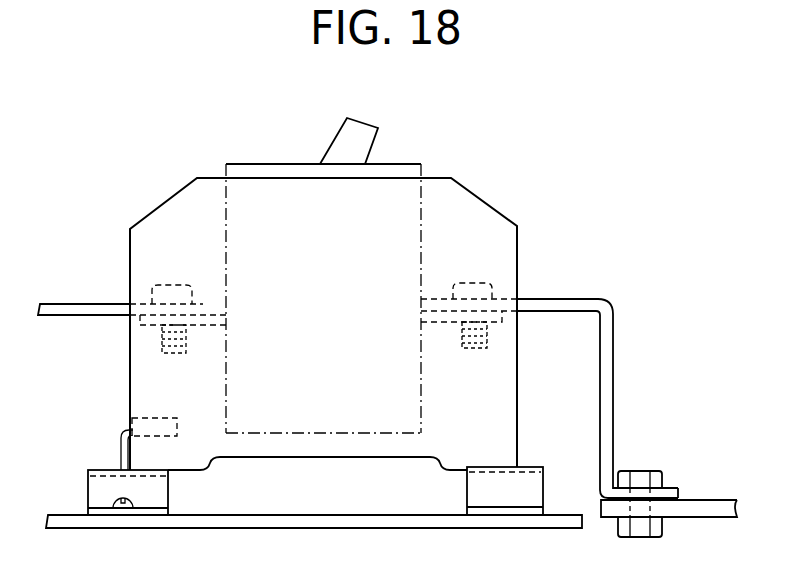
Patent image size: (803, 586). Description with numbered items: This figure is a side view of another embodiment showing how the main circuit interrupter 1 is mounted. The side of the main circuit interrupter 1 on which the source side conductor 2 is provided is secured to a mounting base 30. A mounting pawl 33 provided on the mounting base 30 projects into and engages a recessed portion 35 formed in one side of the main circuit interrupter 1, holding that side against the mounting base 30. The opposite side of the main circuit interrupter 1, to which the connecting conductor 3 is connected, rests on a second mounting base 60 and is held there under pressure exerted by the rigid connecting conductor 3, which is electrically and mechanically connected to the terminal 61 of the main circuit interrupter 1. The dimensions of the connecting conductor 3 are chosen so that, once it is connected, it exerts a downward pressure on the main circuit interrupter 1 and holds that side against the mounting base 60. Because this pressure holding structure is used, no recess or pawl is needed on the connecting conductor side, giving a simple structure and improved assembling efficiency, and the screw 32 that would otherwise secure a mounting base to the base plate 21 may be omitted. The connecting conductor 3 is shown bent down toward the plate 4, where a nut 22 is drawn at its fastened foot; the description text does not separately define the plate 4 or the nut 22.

The main circuit interrupter 1 is at (483, 199).
The source side conductor 2 is at (78, 303).
The connecting conductor 3 is at (613, 325).
The mounting plate 4 is at (705, 498).
The base plate 21 is at (313, 513).
The nut 22 is at (640, 480).
The mounting base 30 is at (97, 488).
The screw 32 is at (123, 509).
The mounting pawl 33 is at (121, 452).
The recessed portion 35 is at (132, 425).
The mounting base 60 is at (480, 490).
The terminal 61 is at (497, 317).